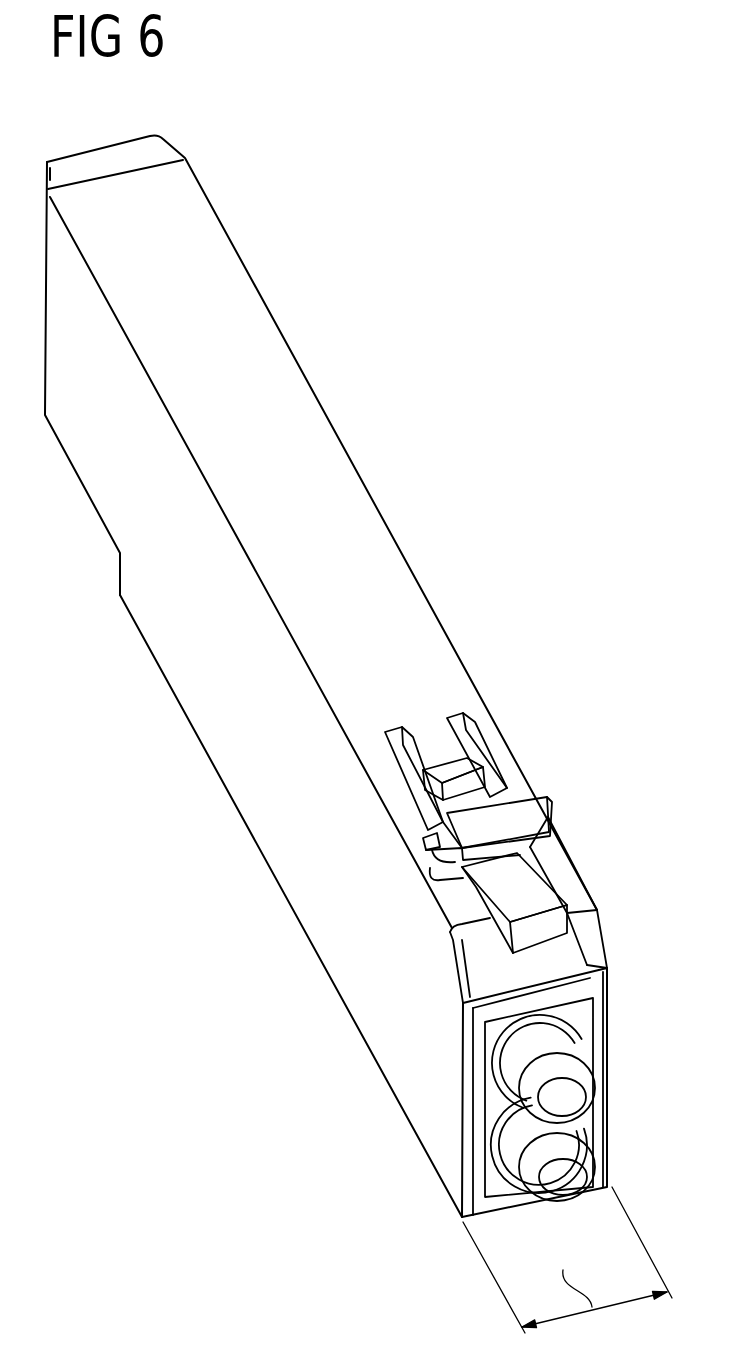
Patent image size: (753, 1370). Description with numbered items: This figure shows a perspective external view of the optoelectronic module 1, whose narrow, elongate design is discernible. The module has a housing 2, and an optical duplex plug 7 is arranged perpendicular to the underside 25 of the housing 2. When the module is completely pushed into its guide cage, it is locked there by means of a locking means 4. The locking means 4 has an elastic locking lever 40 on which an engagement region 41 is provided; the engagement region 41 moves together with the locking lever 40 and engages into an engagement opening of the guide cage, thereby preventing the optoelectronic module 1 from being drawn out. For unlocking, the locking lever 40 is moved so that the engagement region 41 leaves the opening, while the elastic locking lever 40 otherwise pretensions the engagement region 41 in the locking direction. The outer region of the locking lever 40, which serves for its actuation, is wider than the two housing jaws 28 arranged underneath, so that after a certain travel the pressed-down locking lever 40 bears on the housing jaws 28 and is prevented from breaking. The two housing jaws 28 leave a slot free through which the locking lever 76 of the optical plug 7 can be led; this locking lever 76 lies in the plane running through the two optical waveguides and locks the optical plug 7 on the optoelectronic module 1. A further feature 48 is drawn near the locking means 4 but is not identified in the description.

The optoelectronic module 1 is at (370, 328).
The housing 2 is at (393, 580).
The locking means 4 is at (560, 782).
The optical plug 7 is at (583, 1010).
The underside 25 is at (418, 1140).
The housing jaws 28 is at (565, 877).
The locking lever 40 is at (525, 800).
The engagement region 41 is at (458, 772).
The latch tab 48 is at (425, 858).
The locking lever 76 is at (580, 912).